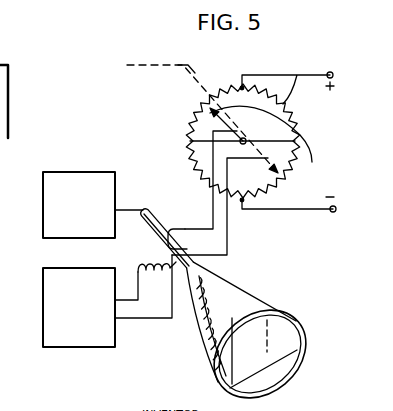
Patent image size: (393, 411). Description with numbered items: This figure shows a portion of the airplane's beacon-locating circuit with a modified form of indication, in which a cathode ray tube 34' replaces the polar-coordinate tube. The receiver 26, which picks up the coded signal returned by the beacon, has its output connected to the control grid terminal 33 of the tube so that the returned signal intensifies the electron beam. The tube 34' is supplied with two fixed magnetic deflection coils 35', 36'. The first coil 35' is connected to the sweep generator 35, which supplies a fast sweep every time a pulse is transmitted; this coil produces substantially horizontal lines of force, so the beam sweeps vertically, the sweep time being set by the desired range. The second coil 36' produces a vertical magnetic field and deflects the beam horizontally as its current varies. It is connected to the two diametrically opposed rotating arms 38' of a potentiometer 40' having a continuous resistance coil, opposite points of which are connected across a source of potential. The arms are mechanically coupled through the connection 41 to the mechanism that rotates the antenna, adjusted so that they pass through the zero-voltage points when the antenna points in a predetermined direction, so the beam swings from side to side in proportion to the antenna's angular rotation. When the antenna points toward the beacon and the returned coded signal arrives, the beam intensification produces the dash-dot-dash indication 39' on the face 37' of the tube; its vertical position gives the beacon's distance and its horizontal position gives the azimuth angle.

The receiver 26 is at (43, 211).
The sweep generator 35 is at (86, 301).
The magnetic deflection coil 35' is at (134, 257).
The control grid terminal 33 is at (231, 291).
The cathode ray tube 34' is at (241, 322).
The face of the tube 37' is at (260, 351).
The dash-dot-dash indication 39' is at (299, 318).
The magnetic deflection coil 36' is at (215, 193).
The diametrically opposed arms 38' is at (260, 141).
The potentiometer 40' is at (288, 128).
The mechanical connection 41 is at (185, 72).